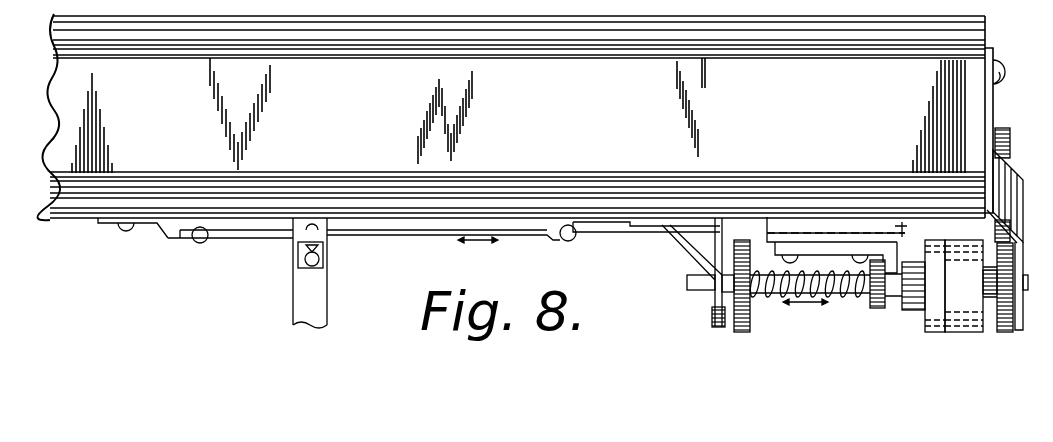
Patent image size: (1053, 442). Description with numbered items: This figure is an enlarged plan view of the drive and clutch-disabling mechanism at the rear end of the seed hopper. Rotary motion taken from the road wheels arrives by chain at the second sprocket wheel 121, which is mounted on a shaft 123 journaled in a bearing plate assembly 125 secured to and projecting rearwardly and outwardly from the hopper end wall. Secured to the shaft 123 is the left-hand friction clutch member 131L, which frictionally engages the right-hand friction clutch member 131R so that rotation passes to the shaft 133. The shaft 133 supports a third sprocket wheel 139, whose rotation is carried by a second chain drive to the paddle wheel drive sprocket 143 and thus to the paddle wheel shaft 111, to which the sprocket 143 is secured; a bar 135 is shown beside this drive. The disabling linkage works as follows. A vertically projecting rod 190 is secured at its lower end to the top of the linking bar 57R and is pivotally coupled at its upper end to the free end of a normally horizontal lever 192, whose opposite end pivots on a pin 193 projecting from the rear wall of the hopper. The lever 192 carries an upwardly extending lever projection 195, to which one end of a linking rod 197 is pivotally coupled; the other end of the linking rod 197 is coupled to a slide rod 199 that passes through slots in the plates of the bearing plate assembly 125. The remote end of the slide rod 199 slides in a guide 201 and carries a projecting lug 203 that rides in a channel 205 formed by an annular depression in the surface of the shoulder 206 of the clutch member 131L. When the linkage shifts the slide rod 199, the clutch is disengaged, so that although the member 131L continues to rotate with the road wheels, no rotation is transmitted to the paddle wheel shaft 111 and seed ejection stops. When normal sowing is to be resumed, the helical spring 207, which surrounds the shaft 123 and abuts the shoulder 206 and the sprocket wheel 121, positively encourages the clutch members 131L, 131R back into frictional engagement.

The linking bar 57R is at (317, 288).
The paddle wheel shaft 111 is at (1017, 168).
The second sprocket wheel 121 is at (752, 323).
The shaft 123 is at (700, 289).
The bearing plate assembly 125 is at (723, 245).
The left-hand friction clutch member 131L is at (936, 332).
The right-hand friction clutch member 131R is at (974, 332).
The shaft 133 is at (1027, 278).
The vertical bar 135 is at (1023, 246).
The third sprocket wheel 139 is at (1010, 330).
The paddle wheel drive sprocket 143 is at (1008, 128).
The vertically projecting rod 190 is at (325, 243).
The lever 192 is at (260, 239).
The pin 193 is at (125, 235).
The lever projection 195 is at (188, 243).
The linking rod 197 is at (450, 235).
The slide rod 199 is at (622, 238).
The guide 201 is at (907, 226).
The projecting lug 203 is at (890, 263).
The channel 205 is at (886, 310).
The shoulder 206 is at (912, 312).
The helical spring 207 is at (855, 297).